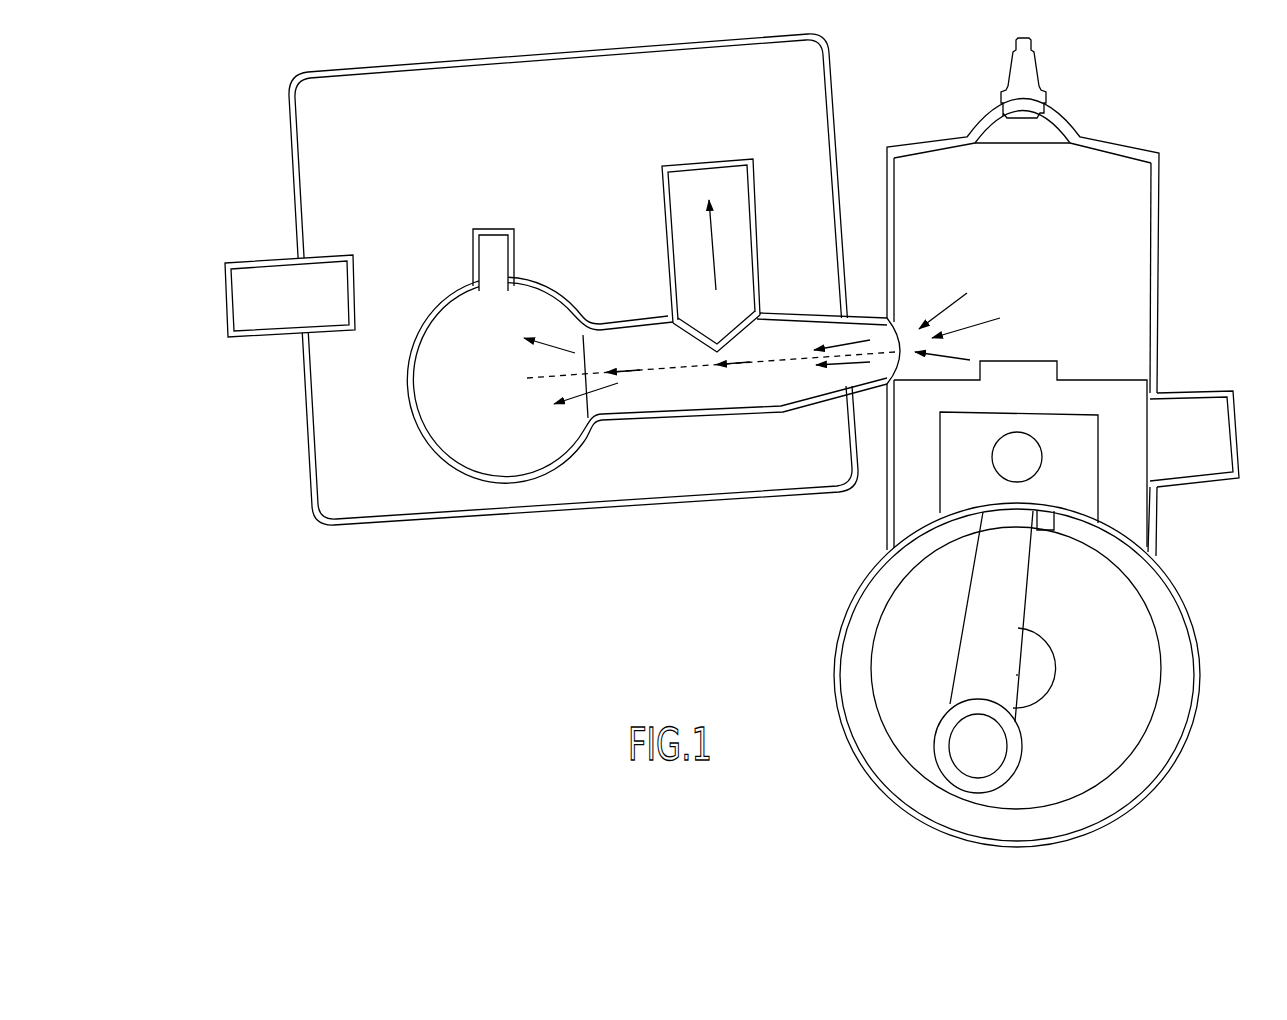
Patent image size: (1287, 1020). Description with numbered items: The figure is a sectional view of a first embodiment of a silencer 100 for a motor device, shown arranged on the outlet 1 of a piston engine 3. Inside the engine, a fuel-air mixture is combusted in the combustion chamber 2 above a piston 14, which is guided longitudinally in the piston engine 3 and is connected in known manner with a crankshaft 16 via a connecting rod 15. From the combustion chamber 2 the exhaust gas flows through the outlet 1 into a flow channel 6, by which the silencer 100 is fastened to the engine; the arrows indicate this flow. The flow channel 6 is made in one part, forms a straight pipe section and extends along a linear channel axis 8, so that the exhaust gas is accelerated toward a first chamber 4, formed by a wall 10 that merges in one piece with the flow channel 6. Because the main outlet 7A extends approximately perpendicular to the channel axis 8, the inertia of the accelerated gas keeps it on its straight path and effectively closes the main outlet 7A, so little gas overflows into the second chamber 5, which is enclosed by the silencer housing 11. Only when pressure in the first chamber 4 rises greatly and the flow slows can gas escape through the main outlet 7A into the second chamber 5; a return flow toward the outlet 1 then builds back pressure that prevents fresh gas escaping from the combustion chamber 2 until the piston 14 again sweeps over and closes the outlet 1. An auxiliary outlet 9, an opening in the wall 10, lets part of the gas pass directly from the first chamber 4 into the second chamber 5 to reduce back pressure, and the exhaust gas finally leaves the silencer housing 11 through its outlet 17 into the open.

The silencer 100 is at (258, 166).
The outlet 1 is at (910, 335).
The combustion chamber 2 is at (1058, 263).
The piston engine 3 is at (1162, 200).
The first chamber 4 is at (518, 425).
The second chamber 5 is at (580, 158).
The flow channel 6 is at (667, 388).
The main outlet 7A is at (690, 233).
The channel axis 8 is at (690, 365).
The auxiliary outlet 9 is at (473, 257).
The wall 10 is at (408, 410).
The silencer housing 11 is at (307, 433).
The piston 14 is at (1117, 400).
The connecting rod 15 is at (1005, 588).
The crankshaft 16 is at (1143, 690).
The outlet 17 is at (253, 307).